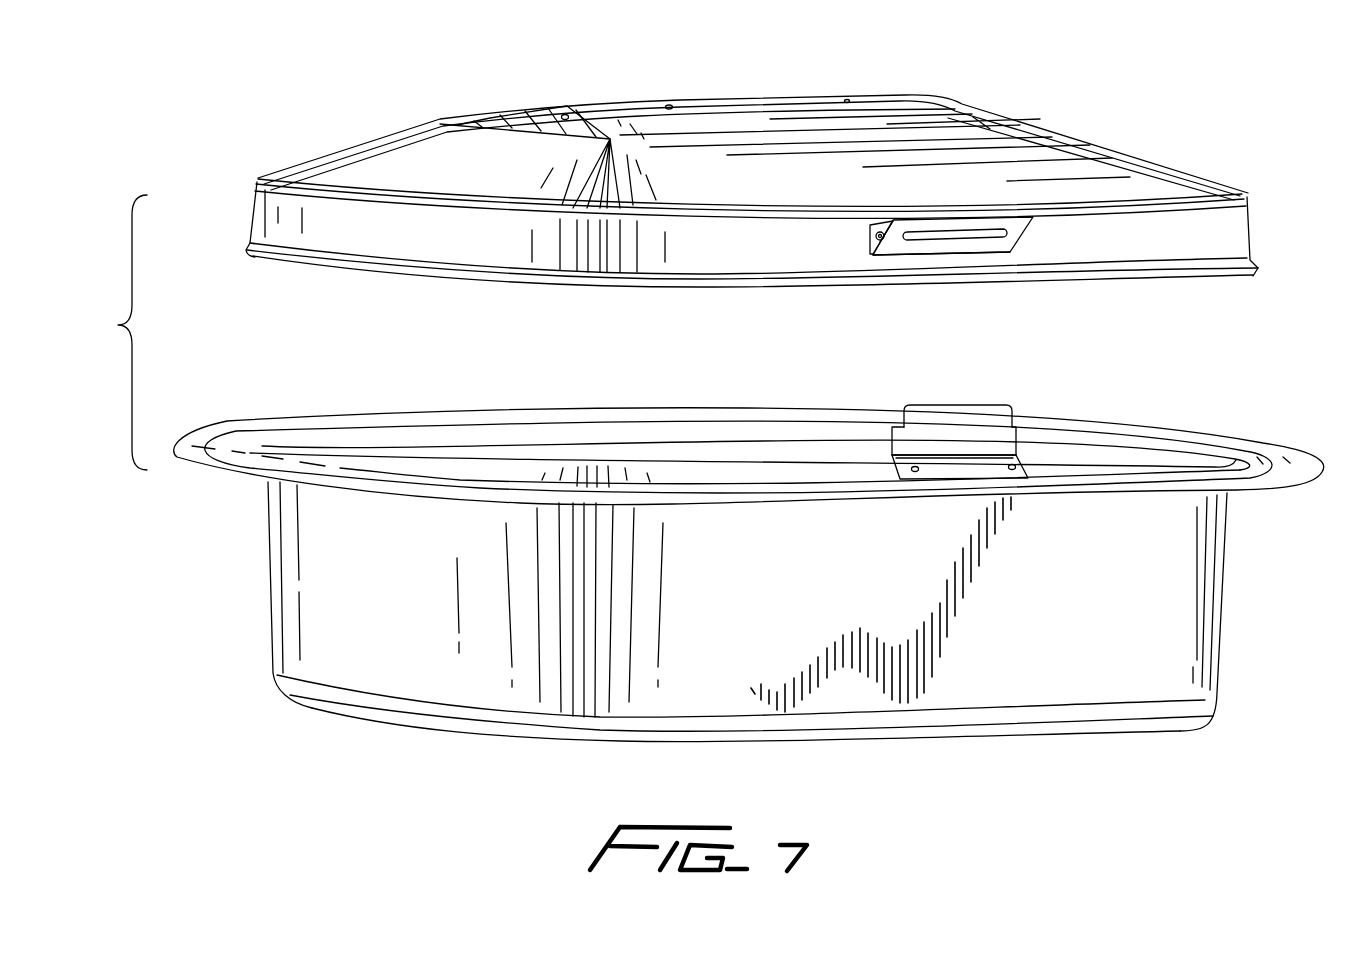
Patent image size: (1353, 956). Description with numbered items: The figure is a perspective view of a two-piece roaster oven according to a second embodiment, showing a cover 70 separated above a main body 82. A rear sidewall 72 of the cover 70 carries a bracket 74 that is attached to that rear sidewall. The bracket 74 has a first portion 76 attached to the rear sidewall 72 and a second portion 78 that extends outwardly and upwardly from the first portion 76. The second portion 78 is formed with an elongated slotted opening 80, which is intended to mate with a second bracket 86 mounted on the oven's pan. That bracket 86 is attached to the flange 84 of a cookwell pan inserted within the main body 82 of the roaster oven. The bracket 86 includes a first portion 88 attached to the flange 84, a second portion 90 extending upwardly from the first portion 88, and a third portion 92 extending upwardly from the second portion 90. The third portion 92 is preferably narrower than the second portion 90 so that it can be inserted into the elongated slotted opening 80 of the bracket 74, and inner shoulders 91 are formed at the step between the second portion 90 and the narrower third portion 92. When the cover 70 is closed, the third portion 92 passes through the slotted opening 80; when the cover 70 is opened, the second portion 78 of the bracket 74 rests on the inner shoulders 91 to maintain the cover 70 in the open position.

The cover 70 is at (754, 218).
The rear sidewall 72 is at (1147, 240).
The bracket 74 is at (1013, 223).
The first portion 76 is at (870, 232).
The second portion 78 is at (893, 243).
The elongated slotted opening 80 is at (946, 238).
The main body 82 is at (749, 581).
The flange 84 is at (1178, 463).
The bracket 86 is at (961, 460).
The first portion 88 is at (954, 471).
The second portion 90 is at (973, 443).
The inner shoulders 91 is at (900, 423).
The third portion 92 is at (945, 411).